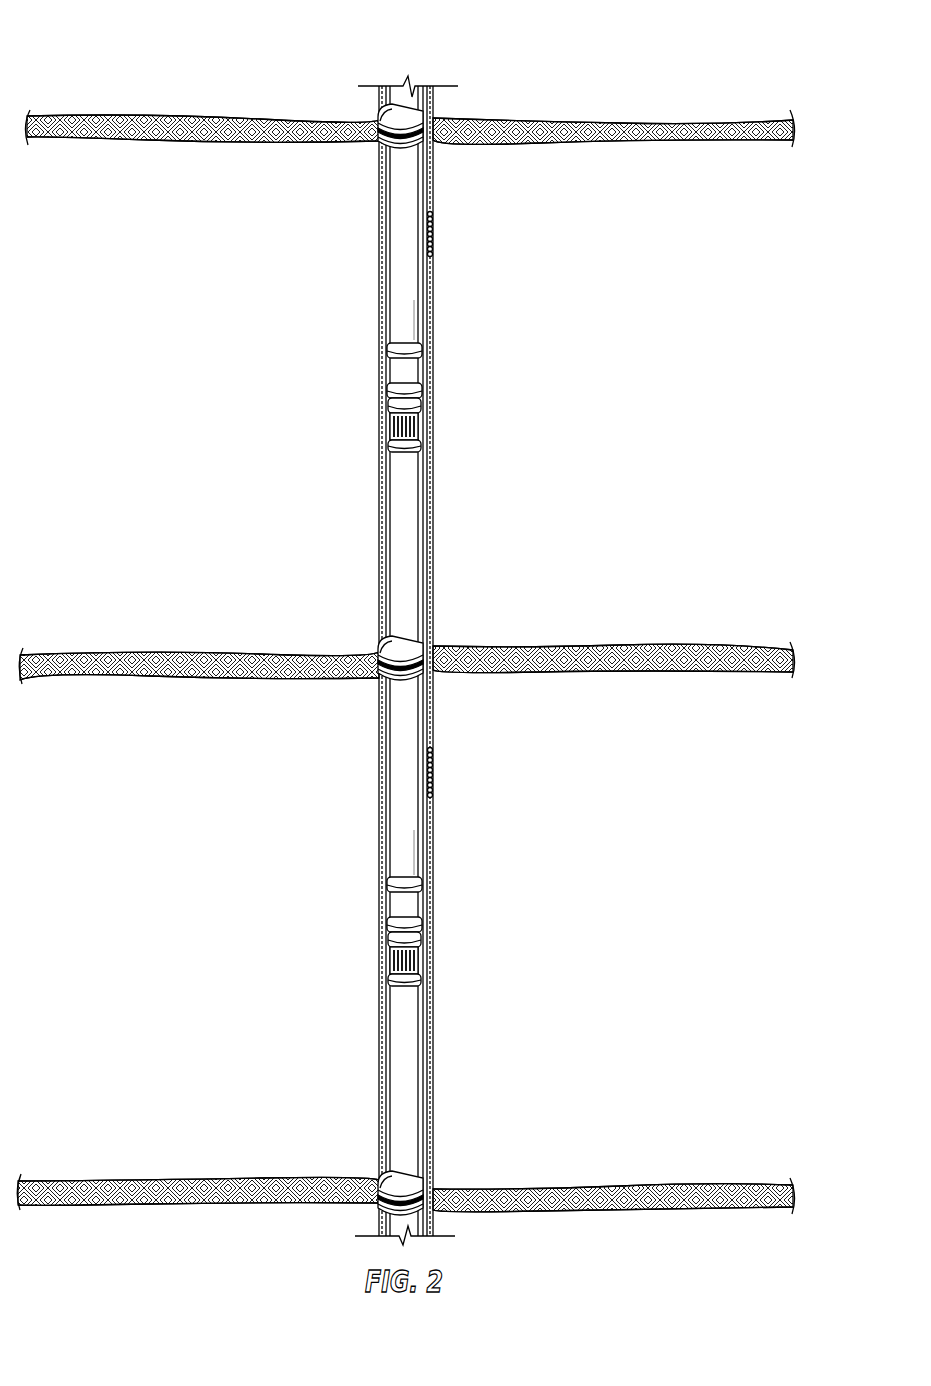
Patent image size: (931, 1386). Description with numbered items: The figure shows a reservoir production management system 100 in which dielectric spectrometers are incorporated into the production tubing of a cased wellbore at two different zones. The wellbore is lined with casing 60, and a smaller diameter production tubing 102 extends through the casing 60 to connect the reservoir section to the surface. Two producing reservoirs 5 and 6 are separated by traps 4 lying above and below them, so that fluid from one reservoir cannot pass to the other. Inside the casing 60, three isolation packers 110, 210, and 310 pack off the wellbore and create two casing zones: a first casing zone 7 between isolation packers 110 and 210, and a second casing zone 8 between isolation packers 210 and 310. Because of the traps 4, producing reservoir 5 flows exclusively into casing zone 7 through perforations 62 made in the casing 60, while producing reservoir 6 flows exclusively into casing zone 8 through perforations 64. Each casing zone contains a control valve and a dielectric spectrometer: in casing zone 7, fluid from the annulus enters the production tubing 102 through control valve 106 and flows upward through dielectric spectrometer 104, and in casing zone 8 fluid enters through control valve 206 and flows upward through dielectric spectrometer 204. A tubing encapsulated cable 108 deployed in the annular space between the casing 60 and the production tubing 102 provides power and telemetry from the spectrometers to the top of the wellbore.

The reservoir production management system 100 is at (131, 63).
The traps 4 is at (688, 120).
The producing reservoir 5 is at (748, 357).
The producing reservoir 6 is at (748, 923).
The first casing zone 7 is at (337, 135).
The second casing zone 8 is at (335, 665).
The casing 60 is at (433, 197).
The perforations 62 is at (430, 232).
The perforations 64 is at (430, 765).
The production tubing 102 is at (407, 277).
The dielectric spectrometer 104 is at (407, 377).
The control valve 106 is at (410, 432).
The tubing encapsulated cable 108 is at (423, 327).
The isolation packer 110 is at (425, 149).
The dielectric spectrometer 204 is at (405, 913).
The control valve 206 is at (408, 965).
The isolation packer 210 is at (420, 678).
The isolation packer 310 is at (420, 1208).